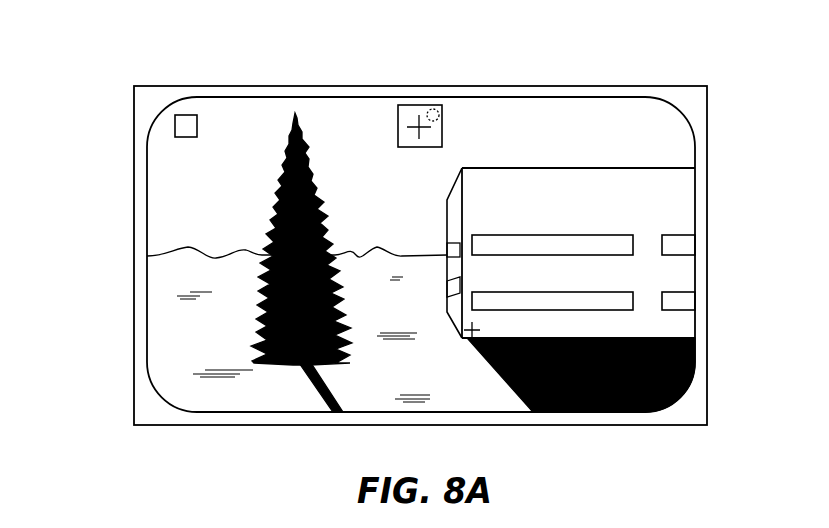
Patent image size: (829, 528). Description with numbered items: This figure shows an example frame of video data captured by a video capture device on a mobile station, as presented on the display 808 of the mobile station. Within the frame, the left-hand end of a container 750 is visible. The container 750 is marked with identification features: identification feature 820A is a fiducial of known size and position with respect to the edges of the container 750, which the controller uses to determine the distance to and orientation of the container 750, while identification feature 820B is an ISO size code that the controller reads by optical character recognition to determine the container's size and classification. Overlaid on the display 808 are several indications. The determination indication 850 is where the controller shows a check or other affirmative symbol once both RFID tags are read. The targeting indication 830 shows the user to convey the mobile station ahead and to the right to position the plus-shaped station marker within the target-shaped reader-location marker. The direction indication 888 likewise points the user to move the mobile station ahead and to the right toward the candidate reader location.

The display 808 is at (360, 86).
The targeting indication 830 is at (421, 105).
The determination indication 850 is at (175, 128).
The container 750 is at (546, 167).
The identification feature 820B is at (590, 221).
The identification feature 820A is at (468, 338).
The direction indication 888 is at (588, 413).